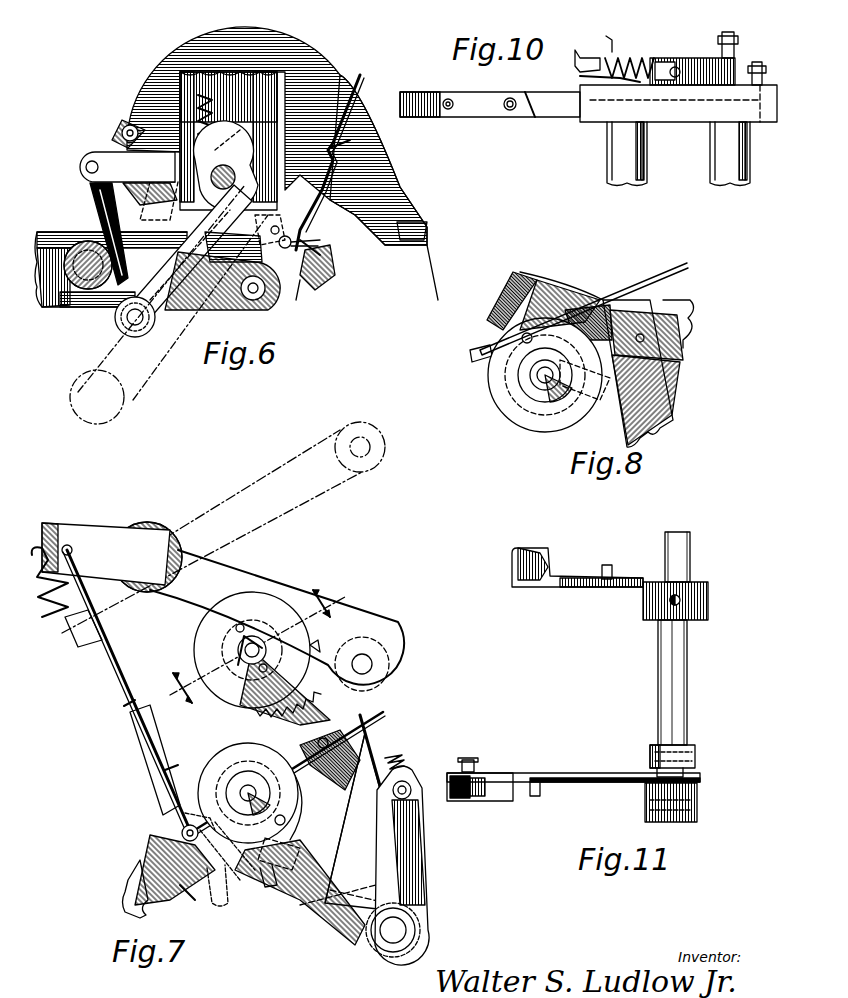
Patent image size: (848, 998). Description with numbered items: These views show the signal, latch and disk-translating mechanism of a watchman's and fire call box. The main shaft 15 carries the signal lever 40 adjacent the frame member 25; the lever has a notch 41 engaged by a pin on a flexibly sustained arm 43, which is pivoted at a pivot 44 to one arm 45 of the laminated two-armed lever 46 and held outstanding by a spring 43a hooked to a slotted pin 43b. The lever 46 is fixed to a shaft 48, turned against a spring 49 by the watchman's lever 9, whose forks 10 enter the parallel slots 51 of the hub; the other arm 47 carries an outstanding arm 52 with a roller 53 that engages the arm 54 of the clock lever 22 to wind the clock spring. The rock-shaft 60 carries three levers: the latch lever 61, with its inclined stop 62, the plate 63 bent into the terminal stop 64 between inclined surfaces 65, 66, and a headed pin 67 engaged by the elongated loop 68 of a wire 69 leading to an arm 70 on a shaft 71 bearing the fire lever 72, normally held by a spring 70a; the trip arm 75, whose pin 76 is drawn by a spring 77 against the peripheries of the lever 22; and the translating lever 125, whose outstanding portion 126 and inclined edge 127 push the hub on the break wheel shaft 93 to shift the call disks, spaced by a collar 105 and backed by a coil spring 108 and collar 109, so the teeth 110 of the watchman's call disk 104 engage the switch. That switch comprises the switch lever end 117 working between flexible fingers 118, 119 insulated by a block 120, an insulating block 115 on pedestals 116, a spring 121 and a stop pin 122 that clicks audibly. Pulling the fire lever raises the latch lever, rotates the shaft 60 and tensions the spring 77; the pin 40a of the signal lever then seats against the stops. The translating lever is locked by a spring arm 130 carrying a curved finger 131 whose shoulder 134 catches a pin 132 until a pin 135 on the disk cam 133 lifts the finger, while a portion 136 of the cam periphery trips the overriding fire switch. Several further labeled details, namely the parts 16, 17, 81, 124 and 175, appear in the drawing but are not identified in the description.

In FIG. 6, the watchman's clock setting and clock winding lever 9 is at (135, 378).
In FIG. 7, the watchman's clock setting and clock winding lever 9 is at (249, 646).
In FIG. 8, the forks 10 is at (655, 318).
In FIG. 6, the main shaft 15 is at (250, 135).
In FIG. 8, the main shaft 15 is at (537, 375).
In FIG. 7, the main shaft 15 is at (256, 793).
In FIG. 6, the shaft collar 16 is at (262, 142).
In FIG. 6, the shaft pin 17 is at (262, 160).
In FIG. 6, the clock lever 22 is at (130, 80).
In FIG. 6, the frame member 25 is at (200, 310).
In FIG. 6, the signal lever 40 is at (322, 242).
In FIG. 7, the signal lever 40 is at (170, 902).
In FIG. 6, the pin 40a is at (332, 258).
In FIG. 8, the pin 40a is at (652, 350).
In FIG. 7, the pin 40a is at (145, 872).
In FIG. 6, the notch 41 is at (320, 282).
In FIG. 8, the notch 41 is at (688, 325).
In FIG. 7, the notch 41 is at (130, 896).
In FIG. 6, the flexibly sustained arm 43 is at (92, 210).
In FIG. 6, the spring 43a is at (100, 226).
In FIG. 6, the pin 43b is at (98, 295).
In FIG. 6, the pivot 44 is at (85, 167).
In FIG. 6, the arm of two-armed lever 45 is at (127, 167).
In FIG. 6, the two-armed lever 46 is at (163, 205).
In FIG. 6, the arm of two-armed lever 47 is at (189, 255).
In FIG. 6, the shaft 48 is at (218, 192).
In FIG. 6, the spring 49 is at (214, 102).
In FIG. 6, the parallel slots 51 is at (243, 288).
In FIG. 6, the outstanding arm 52 is at (137, 338).
In FIG. 6, the roller 53 is at (105, 322).
In FIG. 6, the arm of clock lever 54 is at (395, 190).
In FIG. 6, the rock-shaft 60 is at (111, 269).
In FIG. 11, the rock-shaft 60 is at (688, 670).
In FIG. 7, the rock-shaft 60 is at (414, 930).
In FIG. 11, the latch lever 61 is at (568, 785).
In FIG. 7, the latch lever 61 is at (285, 918).
In FIG. 11, the outstanding stop 62 is at (542, 795).
In FIG. 7, the outstanding stop 62 is at (262, 890).
In FIG. 6, the outstanding plate 63 is at (281, 222).
In FIG. 11, the outstanding plate 63 is at (500, 800).
In FIG. 7, the outstanding plate 63 is at (202, 815).
In FIG. 6, the terminal stop 64 is at (409, 231).
In FIG. 11, the terminal stop 64 is at (456, 800).
In FIG. 7, the terminal stop 64 is at (180, 830).
In FIG. 6, the inclined surface 65 is at (270, 223).
In FIG. 11, the inclined surface 65 is at (500, 772).
In FIG. 6, the inclined surface 66 is at (336, 268).
In FIG. 11, the inclined surface 66 is at (440, 788).
In FIG. 6, the outstanding headed pin 67 is at (282, 302).
In FIG. 11, the outstanding headed pin 67 is at (470, 758).
In FIG. 6, the elongated loop 68 is at (303, 297).
In FIG. 7, the elongated loop 68 is at (150, 762).
In FIG. 6, the wire 69 is at (364, 84).
In FIG. 7, the wire 69 is at (118, 660).
In FIG. 7, the arm 70 is at (62, 527).
In FIG. 7, the spring 70a is at (48, 591).
In FIG. 7, the shaft 71 is at (185, 548).
In FIG. 7, the fire lever 72 is at (270, 470).
In FIG. 6, the trip arm 75 is at (110, 135).
In FIG. 7, the trip arm 75 is at (408, 851).
In FIG. 6, the outstanding pin 76 is at (122, 125).
In FIG. 7, the outstanding pin 76 is at (410, 780).
In FIG. 7, the spring 77 is at (388, 758).
In FIG. 6, the lug 81 is at (233, 247).
In FIG. 7, the break wheel shaft 93 is at (258, 643).
In FIG. 7, the watchman's call disk 104 is at (275, 605).
In FIG. 7, the collar 105 is at (241, 625).
In FIG. 7, the coil spring 108 is at (258, 672).
In FIG. 7, the washer or collar 109 is at (240, 652).
In FIG. 7, the teeth 110 is at (312, 646).
In FIG. 10, the insulating block 115 is at (678, 103).
In FIG. 10, the pedestals 116 is at (710, 146).
In FIG. 10, the outer end of switch lever arm 117 is at (580, 63).
In FIG. 10, the flexible switch finger 118 is at (638, 58).
In FIG. 10, the flexible switch finger 119 is at (580, 80).
In FIG. 10, the insulating block 120 is at (688, 72).
In FIG. 8, the insulating block 120 is at (670, 270).
In FIG. 7, the insulating block 120 is at (378, 712).
In FIG. 10, the spring 121 is at (668, 58).
In FIG. 10, the stop pin 122 is at (607, 38).
In FIG. 8, the pivot 124 is at (598, 305).
In FIG. 7, the pivot 124 is at (324, 738).
In FIG. 8, the translating lever 125 is at (665, 397).
In FIG. 11, the translating lever 125 is at (582, 587).
In FIG. 7, the translating lever 125 is at (345, 805).
In FIG. 8, the outstanding portion 126 is at (490, 300).
In FIG. 11, the outstanding portion 126 is at (520, 548).
In FIG. 8, the inclined edge 127 is at (530, 280).
In FIG. 11, the inclined edge 127 is at (550, 565).
In FIG. 10, the spring arm 130 is at (550, 110).
In FIG. 10, the curved finger 131 is at (448, 97).
In FIG. 8, the curved finger 131 is at (475, 350).
In FIG. 7, the curved finger 131 is at (222, 768).
In FIG. 8, the pin 132 is at (594, 327).
In FIG. 11, the pin 132 is at (608, 565).
In FIG. 7, the pin 132 is at (330, 760).
In FIG. 7, the disk cam 133 is at (248, 752).
In FIG. 10, the shoulder 134 is at (524, 118).
In FIG. 8, the pin 135 is at (541, 335).
In FIG. 7, the pin 135 is at (285, 818).
In FIG. 8, the portion of cam periphery 136 is at (601, 380).
In FIG. 7, the portion of cam periphery 136 is at (283, 854).
In FIG. 11, the collar 175 is at (695, 750).